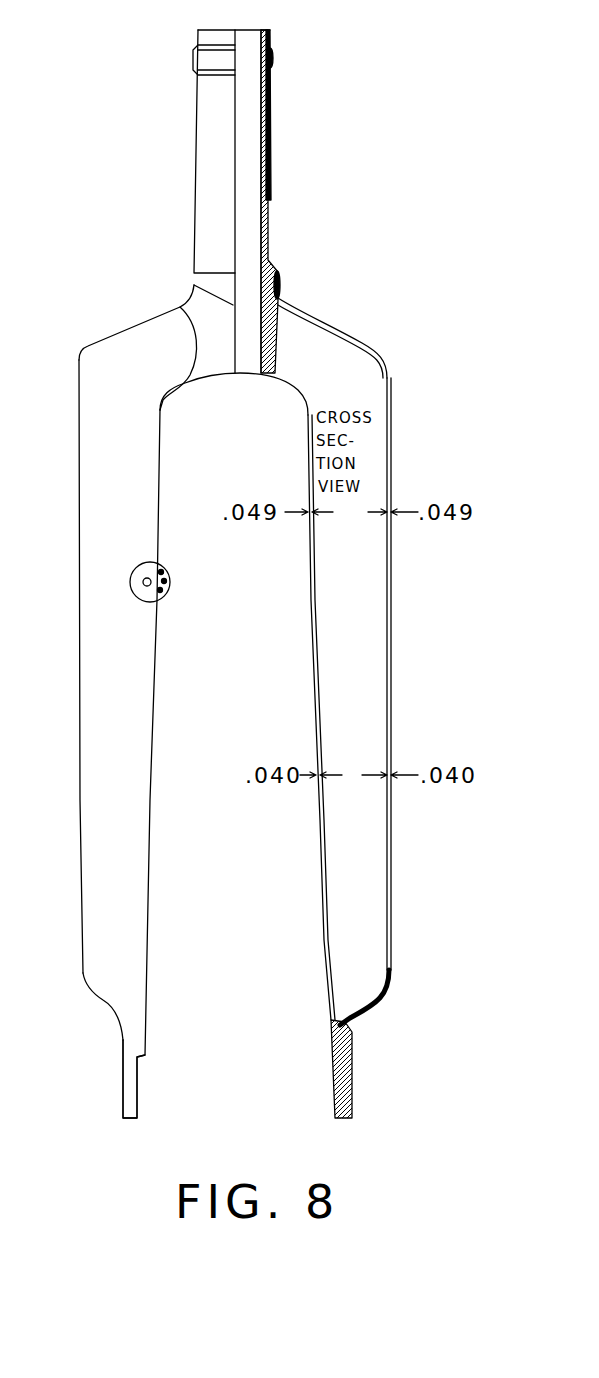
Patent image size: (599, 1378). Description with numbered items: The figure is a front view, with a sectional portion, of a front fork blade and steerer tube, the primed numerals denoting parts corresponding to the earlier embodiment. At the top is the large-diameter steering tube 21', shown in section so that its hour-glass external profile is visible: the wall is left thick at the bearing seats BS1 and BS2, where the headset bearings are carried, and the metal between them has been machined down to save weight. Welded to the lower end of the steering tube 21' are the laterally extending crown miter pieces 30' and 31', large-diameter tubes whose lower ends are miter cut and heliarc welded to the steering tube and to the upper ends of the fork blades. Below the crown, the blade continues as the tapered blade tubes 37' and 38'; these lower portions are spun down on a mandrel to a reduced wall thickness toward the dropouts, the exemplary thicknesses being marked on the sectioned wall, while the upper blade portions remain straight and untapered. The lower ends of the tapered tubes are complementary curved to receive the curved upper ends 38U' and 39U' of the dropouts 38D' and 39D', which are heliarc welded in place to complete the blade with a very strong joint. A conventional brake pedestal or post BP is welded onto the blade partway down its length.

The steering tube 21' is at (318, 201).
The bearing seat BS1 is at (272, 58).
The bearing seat BS2 is at (278, 268).
The crown miter piece 31' is at (344, 335).
The tapered blade tube 37' is at (424, 674).
The upper end of dropout member 39U' is at (399, 997).
The dropout 39D' is at (391, 1069).
The crown miter piece 30' is at (138, 345).
The tapered blade tube 38' is at (49, 666).
The upper end of dropout member 38U' is at (72, 1011).
The dropout 38D' is at (167, 1079).
The brake pedestal BP is at (160, 602).